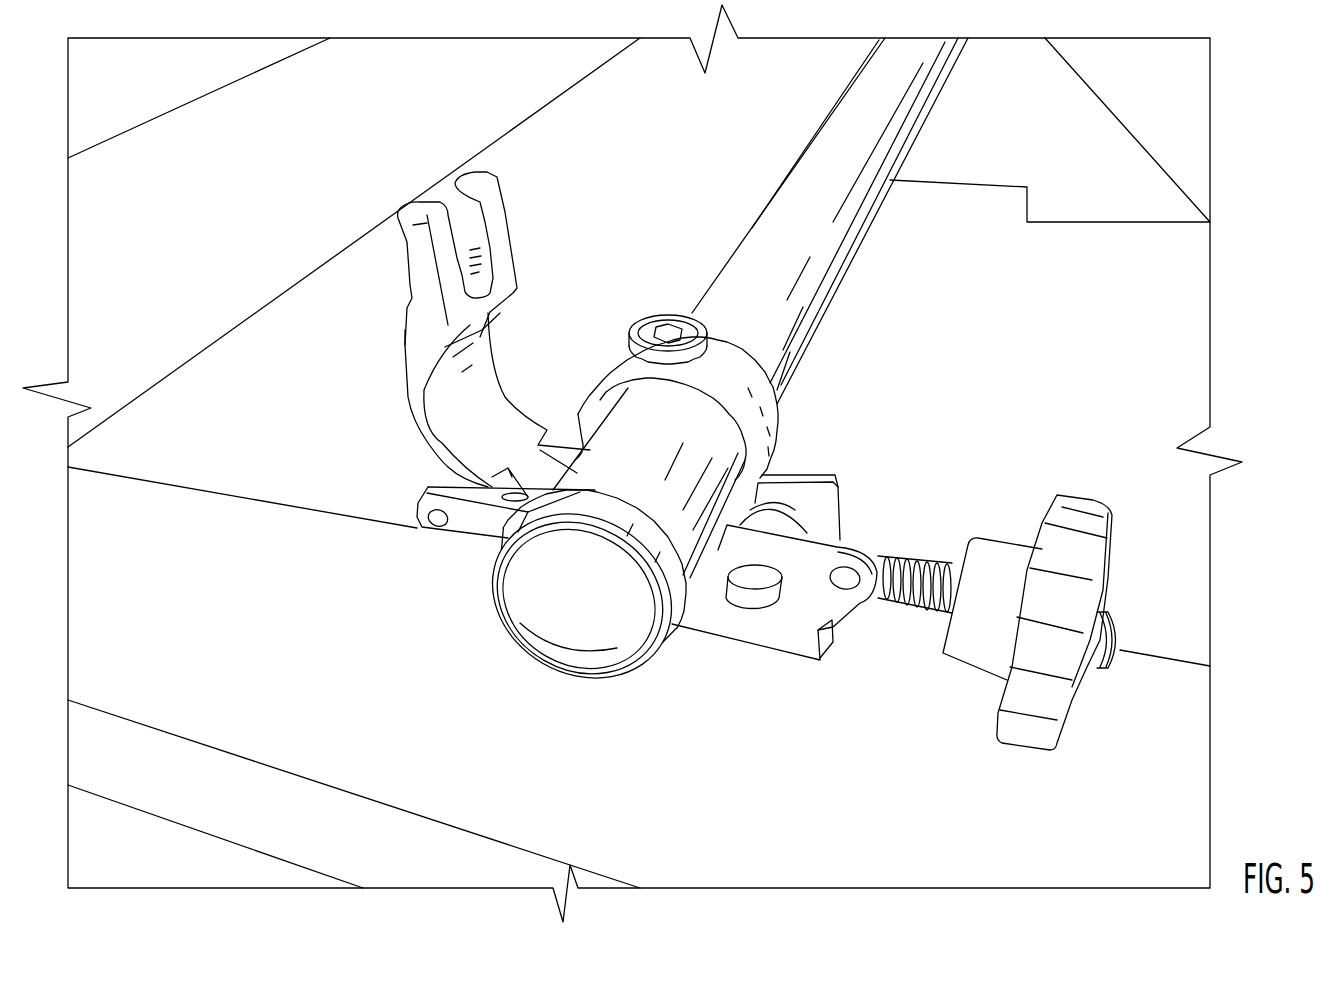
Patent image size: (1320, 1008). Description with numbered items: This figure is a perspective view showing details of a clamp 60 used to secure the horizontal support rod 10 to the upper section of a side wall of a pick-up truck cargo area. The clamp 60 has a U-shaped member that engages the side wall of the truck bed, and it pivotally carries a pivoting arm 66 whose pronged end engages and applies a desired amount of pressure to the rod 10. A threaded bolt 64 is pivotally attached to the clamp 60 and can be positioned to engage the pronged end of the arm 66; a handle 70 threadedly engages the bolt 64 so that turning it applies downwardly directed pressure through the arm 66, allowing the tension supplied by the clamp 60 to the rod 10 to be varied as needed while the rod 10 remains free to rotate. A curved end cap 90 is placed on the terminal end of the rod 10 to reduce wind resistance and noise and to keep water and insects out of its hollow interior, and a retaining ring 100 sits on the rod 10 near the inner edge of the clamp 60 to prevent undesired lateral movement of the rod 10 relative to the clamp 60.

The horizontal support rod 10 is at (770, 264).
The clamp 60 is at (722, 611).
The threaded bolt 64 is at (897, 600).
The pivoting arm 66 is at (436, 232).
The handle 70 is at (1075, 553).
The end cap 90 is at (570, 611).
The retaining ring 100 is at (711, 385).